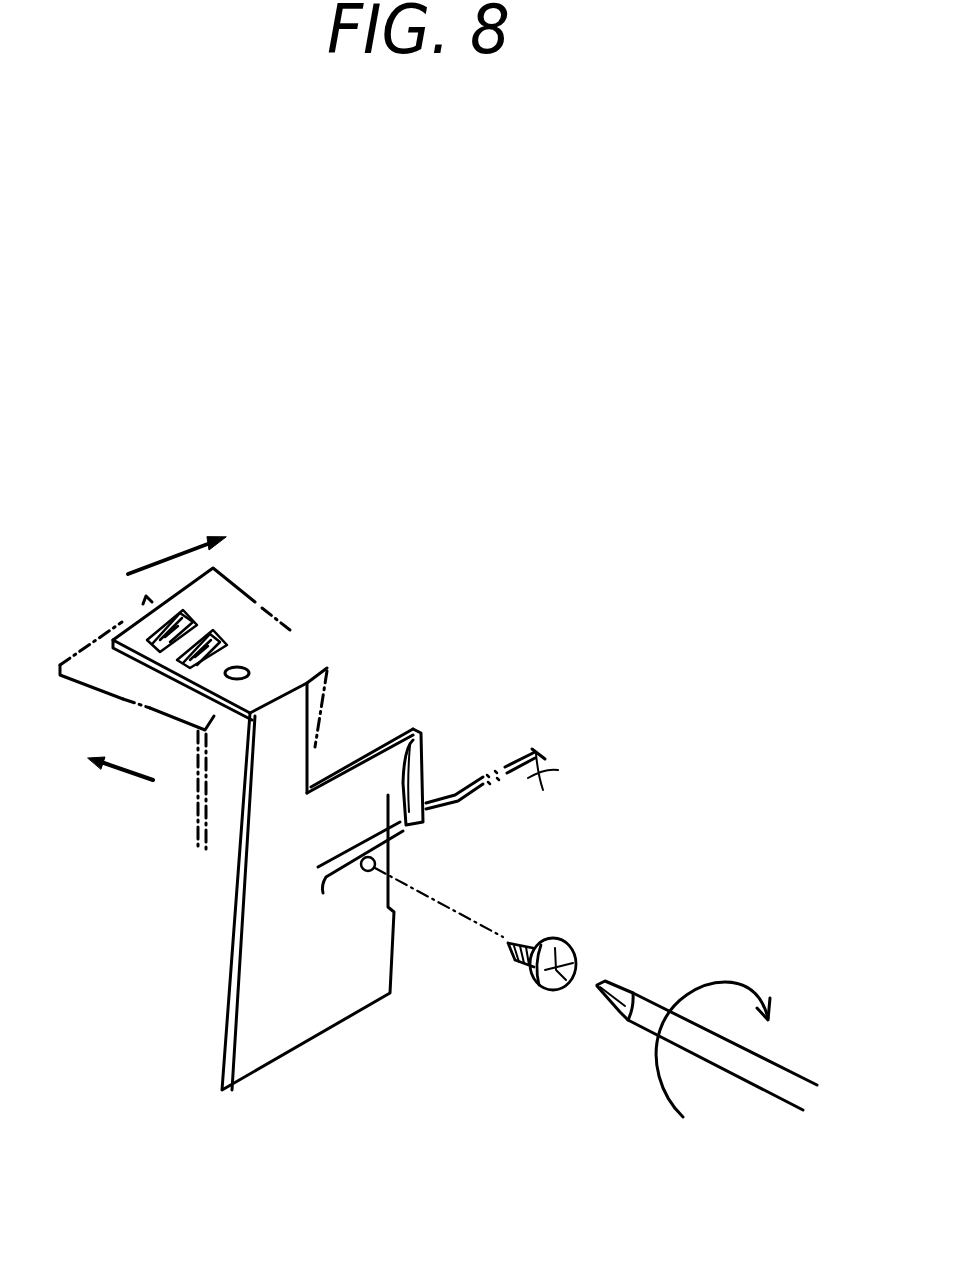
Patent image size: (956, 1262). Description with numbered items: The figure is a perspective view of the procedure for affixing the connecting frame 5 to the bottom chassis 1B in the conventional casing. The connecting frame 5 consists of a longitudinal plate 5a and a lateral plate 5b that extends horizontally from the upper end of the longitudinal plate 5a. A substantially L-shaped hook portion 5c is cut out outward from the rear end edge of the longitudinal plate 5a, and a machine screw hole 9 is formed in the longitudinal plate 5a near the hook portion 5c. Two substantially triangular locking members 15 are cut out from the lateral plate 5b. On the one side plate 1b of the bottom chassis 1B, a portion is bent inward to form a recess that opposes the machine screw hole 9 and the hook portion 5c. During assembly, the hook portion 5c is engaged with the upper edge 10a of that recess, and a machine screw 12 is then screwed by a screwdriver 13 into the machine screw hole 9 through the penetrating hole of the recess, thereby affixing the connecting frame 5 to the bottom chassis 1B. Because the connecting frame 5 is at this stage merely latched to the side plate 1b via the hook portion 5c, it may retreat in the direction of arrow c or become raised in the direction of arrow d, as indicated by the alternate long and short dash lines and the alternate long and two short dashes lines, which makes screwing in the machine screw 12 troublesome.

The connecting frame 5 is at (358, 795).
The longitudinal plate 5a is at (357, 764).
The lateral plate 5b is at (272, 672).
The hook portion 5c is at (498, 703).
The locking members 15 is at (207, 650).
The side plate 1b is at (549, 794).
The bottom chassis 1B is at (560, 754).
The upper edge 10a is at (402, 808).
The machine screw hole 9 is at (368, 872).
The machine screw 12 is at (542, 991).
The screwdriver 13 is at (630, 1018).
The arrow d is at (177, 542).
The arrow c is at (120, 785).